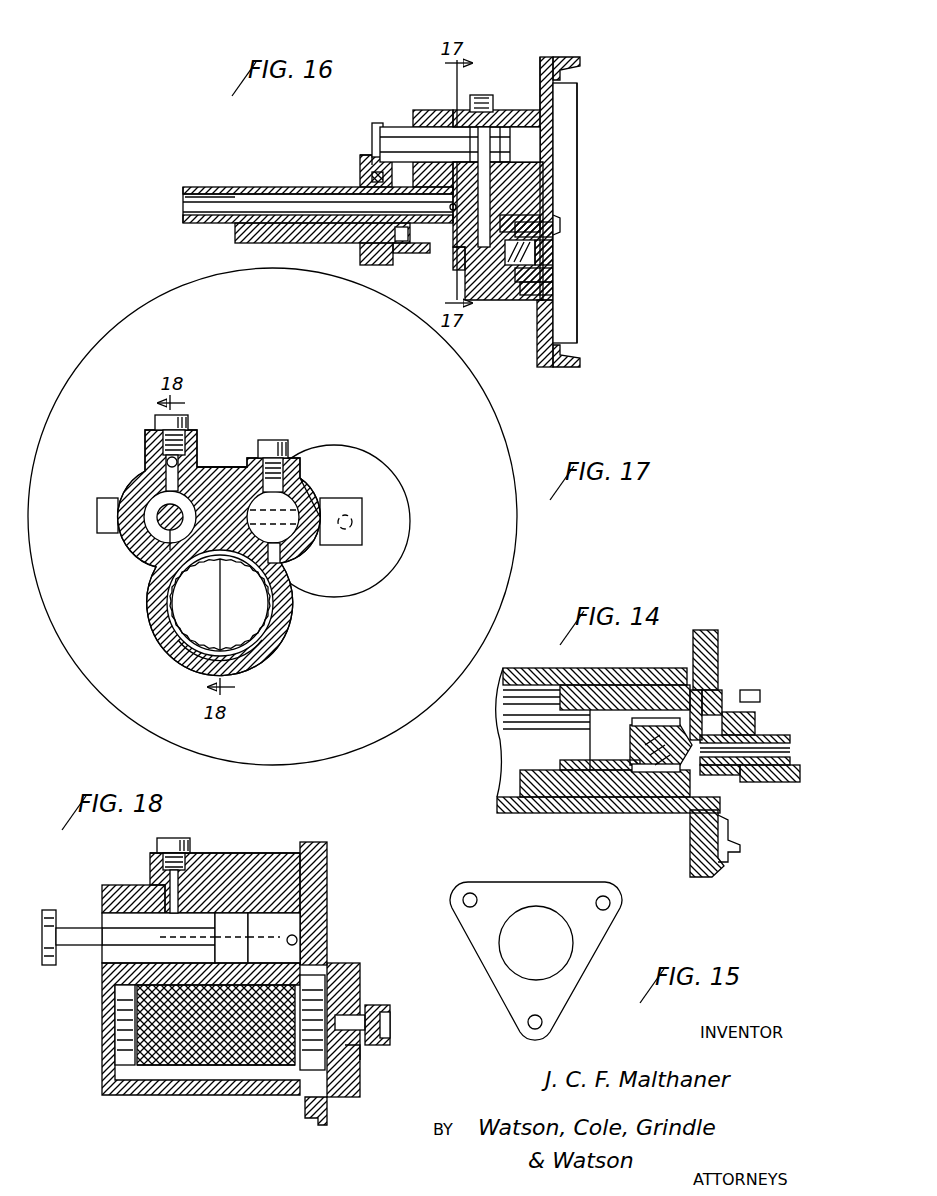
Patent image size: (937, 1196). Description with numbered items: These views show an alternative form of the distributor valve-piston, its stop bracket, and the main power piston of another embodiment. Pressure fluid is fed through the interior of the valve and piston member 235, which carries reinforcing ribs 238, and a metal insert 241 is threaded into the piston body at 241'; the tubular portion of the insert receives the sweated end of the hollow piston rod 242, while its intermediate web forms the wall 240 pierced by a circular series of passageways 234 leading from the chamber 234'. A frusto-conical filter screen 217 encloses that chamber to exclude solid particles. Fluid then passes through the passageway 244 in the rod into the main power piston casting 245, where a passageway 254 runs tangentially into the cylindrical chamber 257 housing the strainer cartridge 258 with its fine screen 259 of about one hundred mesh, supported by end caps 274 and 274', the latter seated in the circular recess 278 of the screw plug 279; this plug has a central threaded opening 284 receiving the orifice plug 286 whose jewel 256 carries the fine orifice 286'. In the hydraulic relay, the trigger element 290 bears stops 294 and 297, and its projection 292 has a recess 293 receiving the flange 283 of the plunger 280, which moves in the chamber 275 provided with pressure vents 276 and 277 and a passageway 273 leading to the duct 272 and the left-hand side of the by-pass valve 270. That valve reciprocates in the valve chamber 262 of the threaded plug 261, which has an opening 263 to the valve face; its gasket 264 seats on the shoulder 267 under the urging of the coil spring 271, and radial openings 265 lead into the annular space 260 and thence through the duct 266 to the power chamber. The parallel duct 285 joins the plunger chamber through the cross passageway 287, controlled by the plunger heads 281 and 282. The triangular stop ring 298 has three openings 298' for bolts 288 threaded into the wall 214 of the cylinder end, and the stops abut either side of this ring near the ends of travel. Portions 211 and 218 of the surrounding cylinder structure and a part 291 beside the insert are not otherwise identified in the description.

In FIG. 14, the housing 211 is at (535, 666).
In FIG. 14, the wall 214 is at (720, 645).
In FIG. 14, the frusto-conical filter screen 217 is at (640, 722).
In FIG. 14, the lower housing wall 218 is at (498, 800).
In FIG. 14, the passageways 234 is at (732, 678).
In FIG. 14, the chamber 234' is at (605, 801).
In FIG. 14, the valve-piston member 235 is at (578, 692).
In FIG. 14, the reinforcing ribs 238 is at (588, 720).
In FIG. 14, the wall 240 is at (652, 773).
In FIG. 14, the metal insert 241 is at (753, 703).
In FIG. 14, the threaded connection 241' is at (680, 685).
In FIG. 16, the hollow piston rod 242 is at (248, 190).
In FIG. 17, the hollow piston rod 242 is at (300, 492).
In FIG. 14, the hollow piston rod 242 is at (775, 736).
In FIG. 16, the passageway 244 is at (197, 192).
In FIG. 14, the passageway 244 is at (745, 778).
In FIG. 16, the main power piston casting 245 is at (546, 58).
In FIG. 17, the main power piston casting 245 is at (220, 462).
In FIG. 18, the main power piston casting 245 is at (288, 855).
In FIG. 16, the passageway 254 is at (415, 251).
In FIG. 17, the passageway 254 is at (292, 560).
In FIG. 18, the jewel 256 is at (390, 1018).
In FIG. 17, the cylindrical chamber 257 is at (288, 630).
In FIG. 18, the cylindrical chamber 257 is at (198, 1067).
In FIG. 17, the strainer cartridge 258 is at (178, 615).
In FIG. 18, the strainer cartridge 258 is at (135, 1030).
In FIG. 17, the strainer screen 259 is at (188, 652).
In FIG. 18, the strainer screen 259 is at (160, 1062).
In FIG. 16, the annular space 260 is at (505, 300).
In FIG. 16, the threaded plug 261 is at (576, 220).
In FIG. 16, the valve chamber 262 is at (514, 213).
In FIG. 16, the opening 263 is at (554, 255).
In FIG. 16, the gasket 264 is at (554, 274).
In FIG. 16, the radial openings 265 is at (554, 288).
In FIG. 16, the duct 266 is at (530, 330).
In FIG. 16, the shoulder 267 is at (555, 228).
In FIG. 16, the by-pass valve 270 is at (536, 250).
In FIG. 16, the coil spring 271 is at (560, 210).
In FIG. 16, the duct 272 is at (475, 300).
In FIG. 17, the duct 272 is at (330, 535).
In FIG. 16, the passageway 273 is at (488, 190).
In FIG. 17, the passageway 273 is at (220, 604).
In FIG. 18, the passageway 273 is at (158, 938).
In FIG. 18, the end cap 274 is at (81, 1025).
In FIG. 18, the end cap 274' is at (275, 1052).
In FIG. 16, the plunger chamber 275 is at (548, 145).
In FIG. 17, the plunger chamber 275 is at (128, 500).
In FIG. 18, the plunger chamber 275 is at (325, 903).
In FIG. 16, the pressure vent 276 is at (512, 110).
In FIG. 18, the pressure vent 276 is at (302, 932).
In FIG. 16, the pressure vent 277 is at (481, 96).
In FIG. 18, the pressure vent 277 is at (262, 942).
In FIG. 18, the circular recess 278 is at (297, 1120).
In FIG. 18, the screw plug 279 is at (352, 965).
In FIG. 16, the plunger 280 is at (400, 140).
In FIG. 17, the plunger 280 is at (152, 533).
In FIG. 18, the plunger 280 is at (72, 930).
In FIG. 16, the head 281 is at (428, 128).
In FIG. 17, the head 281 is at (168, 538).
In FIG. 18, the head 281 is at (115, 890).
In FIG. 16, the head 282 is at (535, 150).
In FIG. 18, the head 282 is at (232, 920).
In FIG. 16, the flange 283 is at (376, 124).
In FIG. 18, the flange 283 is at (46, 910).
In FIG. 18, the central threaded opening 284 is at (360, 1052).
In FIG. 17, the duct 285 is at (158, 452).
In FIG. 18, the duct 285 is at (300, 896).
In FIG. 18, the orifice plug 286 is at (384, 1006).
In FIG. 18, the fine orifice 286' is at (376, 1022).
In FIG. 17, the cross passageway 287 is at (166, 472).
In FIG. 18, the cross passageway 287 is at (172, 895).
In FIG. 14, the bolts 288 is at (726, 838).
In FIG. 16, the trigger element 290 is at (240, 232).
In FIG. 14, the trigger element 290 is at (765, 783).
In FIG. 14, the clip 291 is at (758, 700).
In FIG. 16, the projection 292 is at (360, 172).
In FIG. 16, the recess 293 is at (362, 157).
In FIG. 16, the stop 294 is at (365, 255).
In FIG. 14, the stop 297 is at (662, 775).
In FIG. 14, the stop ring 298 is at (752, 852).
In FIG. 15, the stop ring 298 is at (537, 961).
In FIG. 15, the openings 298' is at (558, 960).